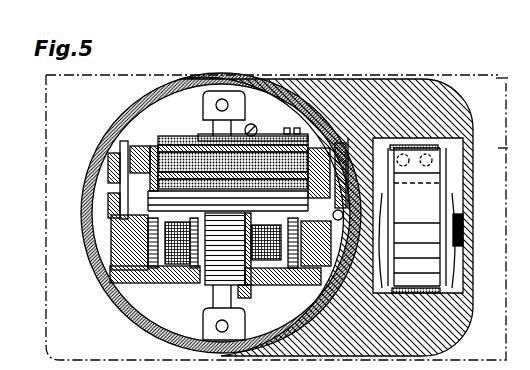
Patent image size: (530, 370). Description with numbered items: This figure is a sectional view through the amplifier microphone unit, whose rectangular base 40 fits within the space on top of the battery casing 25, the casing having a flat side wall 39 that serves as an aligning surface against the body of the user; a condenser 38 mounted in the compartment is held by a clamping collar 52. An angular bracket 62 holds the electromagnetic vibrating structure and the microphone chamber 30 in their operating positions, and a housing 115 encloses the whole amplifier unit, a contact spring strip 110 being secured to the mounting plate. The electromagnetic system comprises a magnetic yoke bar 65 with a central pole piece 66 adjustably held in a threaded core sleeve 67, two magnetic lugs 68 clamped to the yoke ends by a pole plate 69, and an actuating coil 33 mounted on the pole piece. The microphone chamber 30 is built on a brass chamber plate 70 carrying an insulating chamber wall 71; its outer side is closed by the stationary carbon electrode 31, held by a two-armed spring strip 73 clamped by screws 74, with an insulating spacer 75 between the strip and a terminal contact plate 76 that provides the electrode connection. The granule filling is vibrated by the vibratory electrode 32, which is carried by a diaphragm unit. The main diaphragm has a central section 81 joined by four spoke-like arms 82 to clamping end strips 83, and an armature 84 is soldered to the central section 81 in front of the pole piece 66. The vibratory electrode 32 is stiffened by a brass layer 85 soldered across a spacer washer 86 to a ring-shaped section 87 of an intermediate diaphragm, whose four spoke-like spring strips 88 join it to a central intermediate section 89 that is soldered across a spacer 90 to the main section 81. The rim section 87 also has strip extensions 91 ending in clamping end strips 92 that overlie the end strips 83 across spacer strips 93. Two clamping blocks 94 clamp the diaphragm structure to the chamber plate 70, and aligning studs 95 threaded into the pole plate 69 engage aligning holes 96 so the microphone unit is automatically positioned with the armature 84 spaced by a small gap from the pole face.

The battery casing 25 is at (498, 140).
The microphone chamber 30 is at (215, 113).
The stationary microphone electrode 31 is at (166, 137).
The vibratory microphone electrode 32 is at (280, 125).
The actuating coil 33 is at (196, 310).
The condenser 38 is at (428, 186).
The flat side wall 39 is at (449, 68).
The base 40 is at (496, 70).
The clamping collar 52 is at (440, 132).
The angular bracket 62 is at (176, 338).
The magnetic yoke bar 65 is at (173, 276).
The central pole piece 66 is at (231, 291).
The threaded core sleeve 67 is at (290, 272).
The magnetic lugs 68 is at (132, 276).
The pole plate 69 is at (110, 245).
The chamber plate 70 is at (342, 135).
The microphone chamber wall 71 is at (138, 138).
The spring strip 73 is at (292, 135).
The screws 74 is at (306, 130).
The insulating spacer 75 is at (175, 131).
The terminal contact plate 76 is at (151, 138).
The central diaphragm section 81 is at (103, 155).
The spoke-like arms 82 is at (100, 220).
The clamping end strips 83 is at (104, 203).
The armature 84 is at (85, 232).
The stiffening layer 85 is at (368, 113).
The spacer washer 86 is at (348, 172).
The ring-shaped diaphragm section 87 is at (403, 107).
The spoke-like spring strips 88 is at (258, 133).
The central intermediate diaphragm section 89 is at (209, 100).
The spacer 90 is at (224, 112).
The spoke-like strip extensions 91 is at (100, 168).
The clamping end strips 92 is at (102, 182).
The spacer strips 93 is at (98, 198).
The clamping blocks 94 is at (102, 210).
The aligning studs 95 is at (318, 145).
The aligning holes 96 is at (118, 138).
The contact spring strip 110 is at (255, 132).
The housing 115 is at (205, 125).